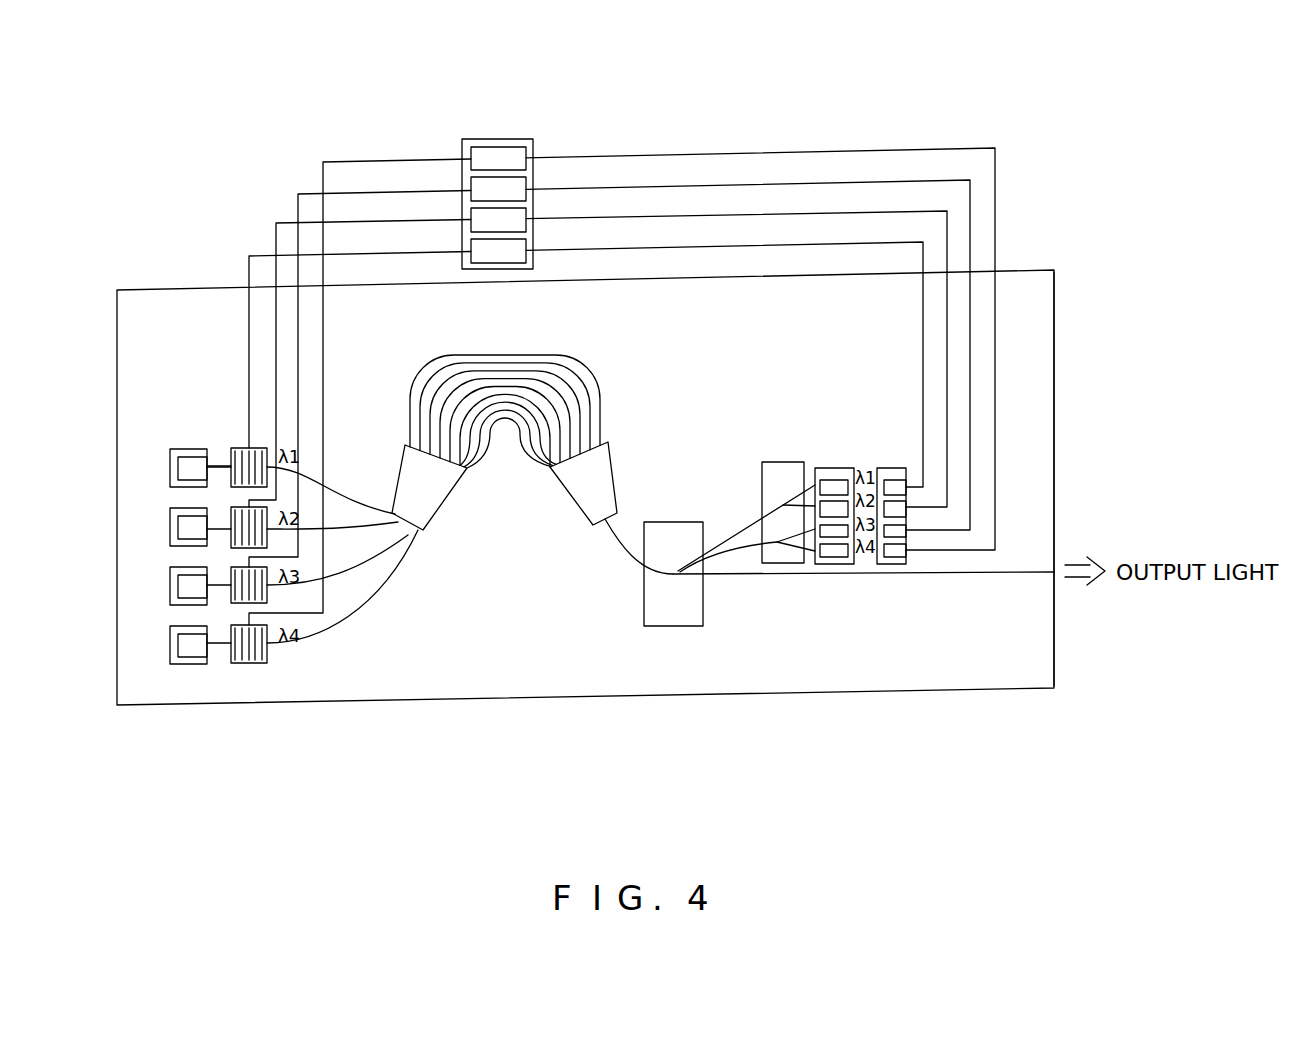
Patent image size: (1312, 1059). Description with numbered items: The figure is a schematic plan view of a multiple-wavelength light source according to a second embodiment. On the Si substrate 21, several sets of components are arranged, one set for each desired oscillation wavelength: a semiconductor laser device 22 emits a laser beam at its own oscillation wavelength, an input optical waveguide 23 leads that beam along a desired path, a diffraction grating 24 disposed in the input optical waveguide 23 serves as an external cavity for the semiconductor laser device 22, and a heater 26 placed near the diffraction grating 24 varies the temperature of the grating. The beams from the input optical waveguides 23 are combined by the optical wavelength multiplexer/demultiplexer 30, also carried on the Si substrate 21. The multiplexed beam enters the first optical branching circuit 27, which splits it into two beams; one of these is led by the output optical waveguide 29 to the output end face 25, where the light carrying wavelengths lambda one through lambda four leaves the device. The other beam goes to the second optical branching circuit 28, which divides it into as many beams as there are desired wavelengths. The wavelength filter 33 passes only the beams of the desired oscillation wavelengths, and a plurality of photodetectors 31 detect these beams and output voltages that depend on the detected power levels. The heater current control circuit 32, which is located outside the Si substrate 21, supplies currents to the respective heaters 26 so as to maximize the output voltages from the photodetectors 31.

The Si substrate 21 is at (150, 707).
The semiconductor laser device 22 is at (172, 470).
The input optical waveguide 23 is at (217, 460).
The diffraction grating 24 is at (240, 487).
The output end face 25 is at (1054, 677).
The heater 26 is at (233, 480).
The first optical branching circuit 27 is at (682, 627).
The second optical branching circuit 28 is at (780, 563).
The output optical waveguide 29 is at (968, 573).
The optical wavelength multiplexer/demultiplexer 30 is at (500, 427).
The photodetector 31 is at (902, 502).
The heater current control circuit 32 is at (487, 138).
The wavelength filter 33 is at (842, 468).